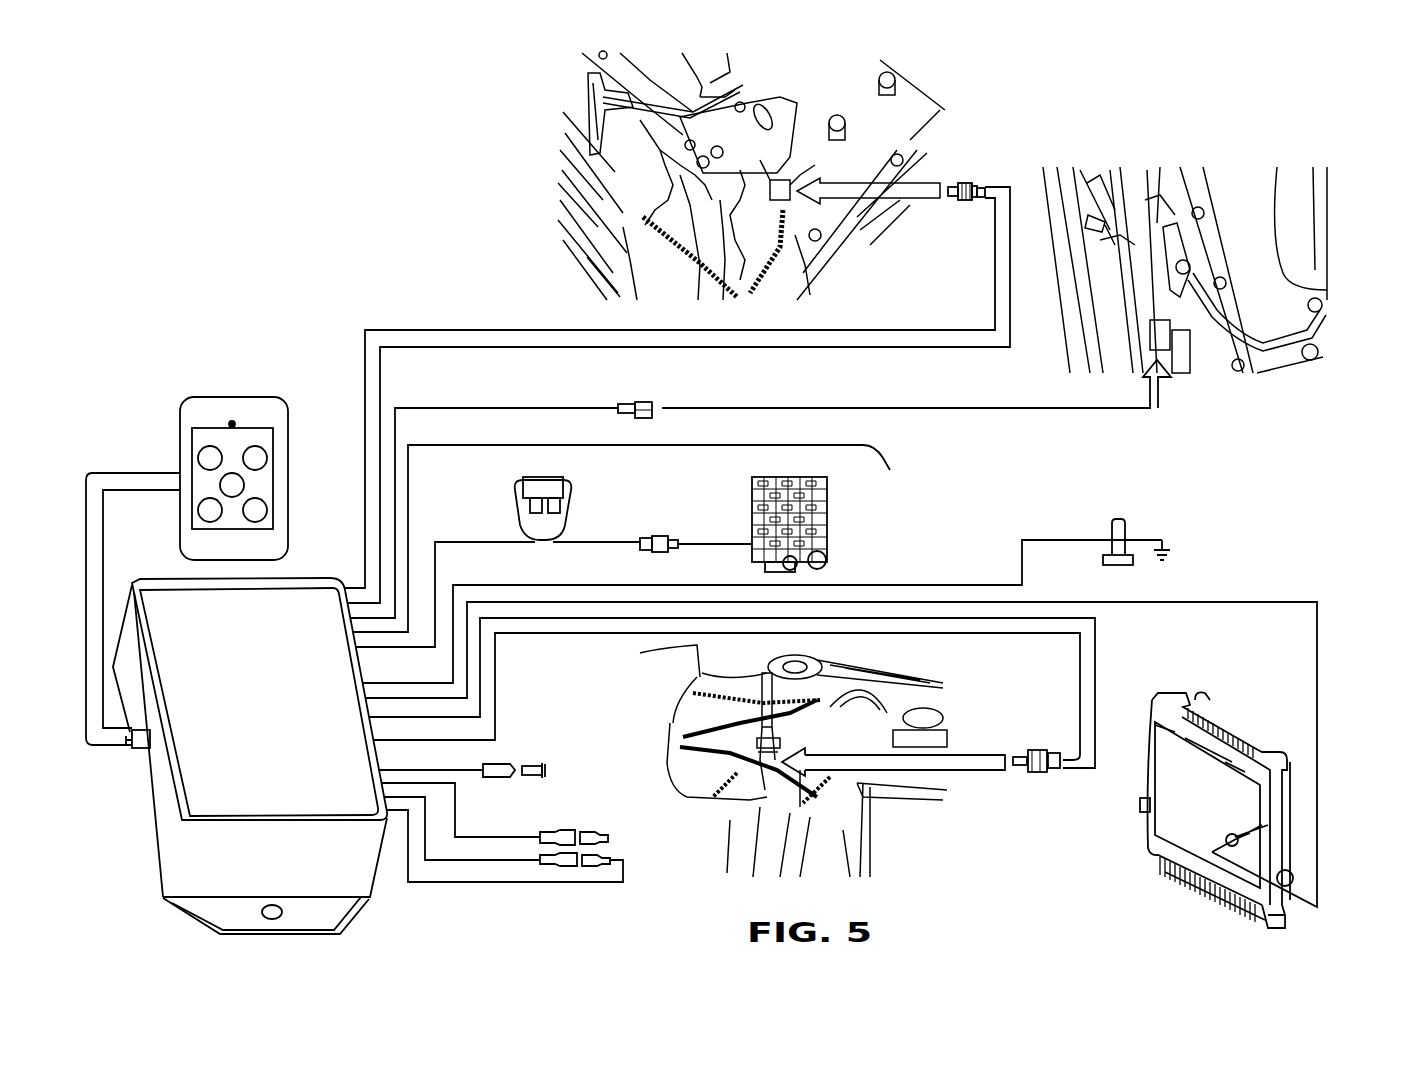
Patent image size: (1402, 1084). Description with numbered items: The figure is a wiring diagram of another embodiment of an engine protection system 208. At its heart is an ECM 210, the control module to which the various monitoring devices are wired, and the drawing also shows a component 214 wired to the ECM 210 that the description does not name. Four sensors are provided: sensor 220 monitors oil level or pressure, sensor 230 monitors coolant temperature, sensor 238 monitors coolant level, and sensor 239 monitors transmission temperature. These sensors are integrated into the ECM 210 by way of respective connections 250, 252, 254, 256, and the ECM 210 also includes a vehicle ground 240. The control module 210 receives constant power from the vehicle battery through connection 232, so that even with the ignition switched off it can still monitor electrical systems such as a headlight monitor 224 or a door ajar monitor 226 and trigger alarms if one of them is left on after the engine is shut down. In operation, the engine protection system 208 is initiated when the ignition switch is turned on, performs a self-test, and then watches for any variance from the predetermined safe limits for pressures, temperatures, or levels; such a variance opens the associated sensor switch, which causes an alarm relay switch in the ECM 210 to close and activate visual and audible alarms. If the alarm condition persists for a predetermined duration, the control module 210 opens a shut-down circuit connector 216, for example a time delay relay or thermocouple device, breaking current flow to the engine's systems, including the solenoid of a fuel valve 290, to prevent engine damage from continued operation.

The engine protection system 208 is at (335, 192).
The ECM 210 is at (147, 823).
The remote keypad 214 is at (223, 397).
The shut-down circuit connector 216 is at (652, 537).
The sensor 220 is at (1028, 772).
The headlight monitor 224 is at (477, 768).
The door ajar monitor 226 is at (538, 832).
The sensor 230 is at (963, 185).
The connection 232 is at (647, 538).
The sensor 238 is at (1238, 842).
The sensor 239 is at (567, 866).
The vehicle ground 240 is at (1162, 540).
The connection 250 is at (1082, 772).
The connection 252 is at (1012, 187).
The connection 254 is at (1317, 758).
The connection 256 is at (423, 883).
The fuel valve 290 is at (628, 403).